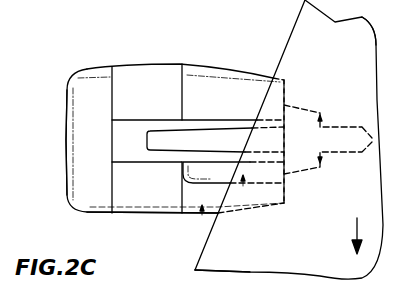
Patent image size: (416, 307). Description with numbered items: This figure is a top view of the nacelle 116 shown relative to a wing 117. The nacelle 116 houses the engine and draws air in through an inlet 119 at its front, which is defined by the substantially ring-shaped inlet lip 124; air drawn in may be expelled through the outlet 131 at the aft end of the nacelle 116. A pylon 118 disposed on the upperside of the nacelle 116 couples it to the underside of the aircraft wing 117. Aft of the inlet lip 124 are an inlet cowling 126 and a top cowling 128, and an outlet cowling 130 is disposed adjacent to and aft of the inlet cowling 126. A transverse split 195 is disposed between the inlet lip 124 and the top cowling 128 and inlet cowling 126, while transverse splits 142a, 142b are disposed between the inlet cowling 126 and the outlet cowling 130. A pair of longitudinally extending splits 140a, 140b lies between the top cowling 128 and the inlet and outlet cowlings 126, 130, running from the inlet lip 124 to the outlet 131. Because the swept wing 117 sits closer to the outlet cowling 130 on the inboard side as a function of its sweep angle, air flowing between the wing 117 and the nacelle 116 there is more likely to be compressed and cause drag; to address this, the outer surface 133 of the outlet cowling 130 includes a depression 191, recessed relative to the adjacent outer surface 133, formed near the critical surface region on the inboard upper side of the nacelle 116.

The nacelle 116 is at (298, 78).
The aircraft wing 117 is at (375, 30).
The pylon 118 is at (345, 160).
The inlet 119 is at (62, 105).
The inlet lip 124 is at (90, 80).
The inlet cowling 126 is at (154, 214).
The top cowling 128 is at (147, 141).
The outlet cowling 130 is at (236, 205).
The outlet 131 is at (300, 97).
The outer surface 133 is at (204, 216).
The longitudinally extending split 140a is at (95, 211).
The longitudinally extending split 140b is at (143, 112).
The transverse split 142a is at (182, 215).
The transverse split 142b is at (187, 82).
The depression 191 is at (262, 200).
The transverse split 195 is at (118, 85).